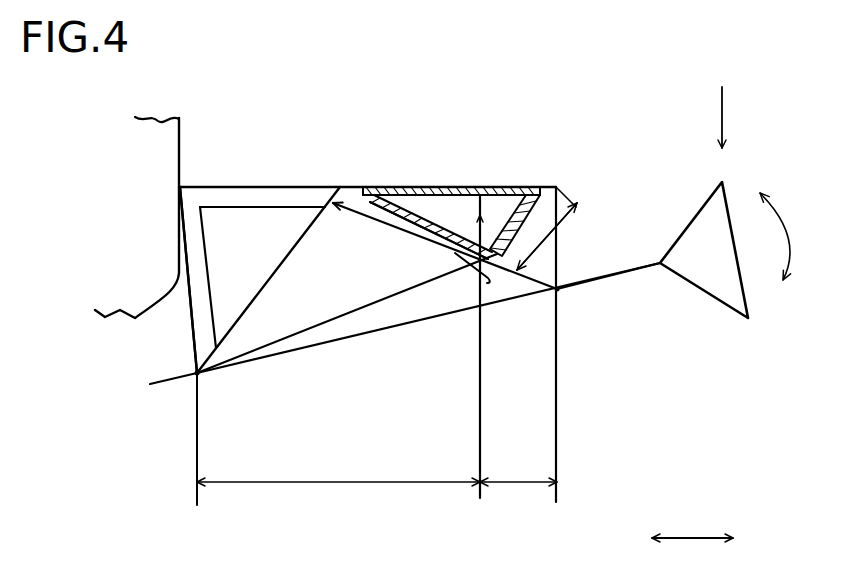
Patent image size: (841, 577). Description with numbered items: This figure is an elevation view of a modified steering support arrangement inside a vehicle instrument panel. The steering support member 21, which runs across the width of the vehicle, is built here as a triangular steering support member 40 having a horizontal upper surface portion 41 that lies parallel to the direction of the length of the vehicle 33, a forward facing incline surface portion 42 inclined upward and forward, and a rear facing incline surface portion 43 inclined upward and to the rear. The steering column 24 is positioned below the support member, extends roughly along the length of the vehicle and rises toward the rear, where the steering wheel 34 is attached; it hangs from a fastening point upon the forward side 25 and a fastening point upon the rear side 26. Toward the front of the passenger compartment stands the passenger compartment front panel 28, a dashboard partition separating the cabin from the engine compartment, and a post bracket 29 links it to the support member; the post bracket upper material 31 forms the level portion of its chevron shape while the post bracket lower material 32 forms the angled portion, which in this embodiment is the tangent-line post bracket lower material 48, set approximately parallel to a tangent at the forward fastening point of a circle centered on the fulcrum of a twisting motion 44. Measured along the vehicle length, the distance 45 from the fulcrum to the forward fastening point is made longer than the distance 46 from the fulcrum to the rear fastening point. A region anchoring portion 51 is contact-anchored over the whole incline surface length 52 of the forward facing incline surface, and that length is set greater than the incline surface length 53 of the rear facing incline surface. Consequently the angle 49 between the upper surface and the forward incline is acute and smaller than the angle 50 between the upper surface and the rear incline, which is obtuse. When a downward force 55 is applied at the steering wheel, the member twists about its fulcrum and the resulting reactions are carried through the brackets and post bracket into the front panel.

The steering support member 21 is at (445, 180).
The steering support member 40 is at (451, 191).
The steering column 24 is at (643, 267).
The fastening point upon the forward side 25 is at (197, 373).
The fastening point upon the rear side 26 is at (560, 292).
The passenger compartment front panel 28 is at (182, 128).
The post bracket 29 is at (288, 170).
The post bracket upper material 31 is at (240, 187).
The post bracket lower material 32 is at (188, 312).
The post bracket lower material 48 is at (188, 280).
The direction of the length of the vehicle 33 is at (697, 538).
The steering wheel 34 is at (728, 193).
The horizontal upper surface portion 41 is at (480, 190).
The forward facing incline surface portion 42 is at (363, 203).
The rear facing incline surface portion 43 is at (560, 185).
The fulcrum of a twisting motion 44 is at (512, 195).
The distance 45 is at (355, 485).
The distance 46 is at (518, 485).
The angle 49 is at (398, 207).
The angle 50 is at (524, 192).
The region anchoring portion 51 is at (405, 222).
The incline surface length 52 is at (410, 242).
The incline surface length 53 is at (557, 247).
The force 55 is at (725, 100).